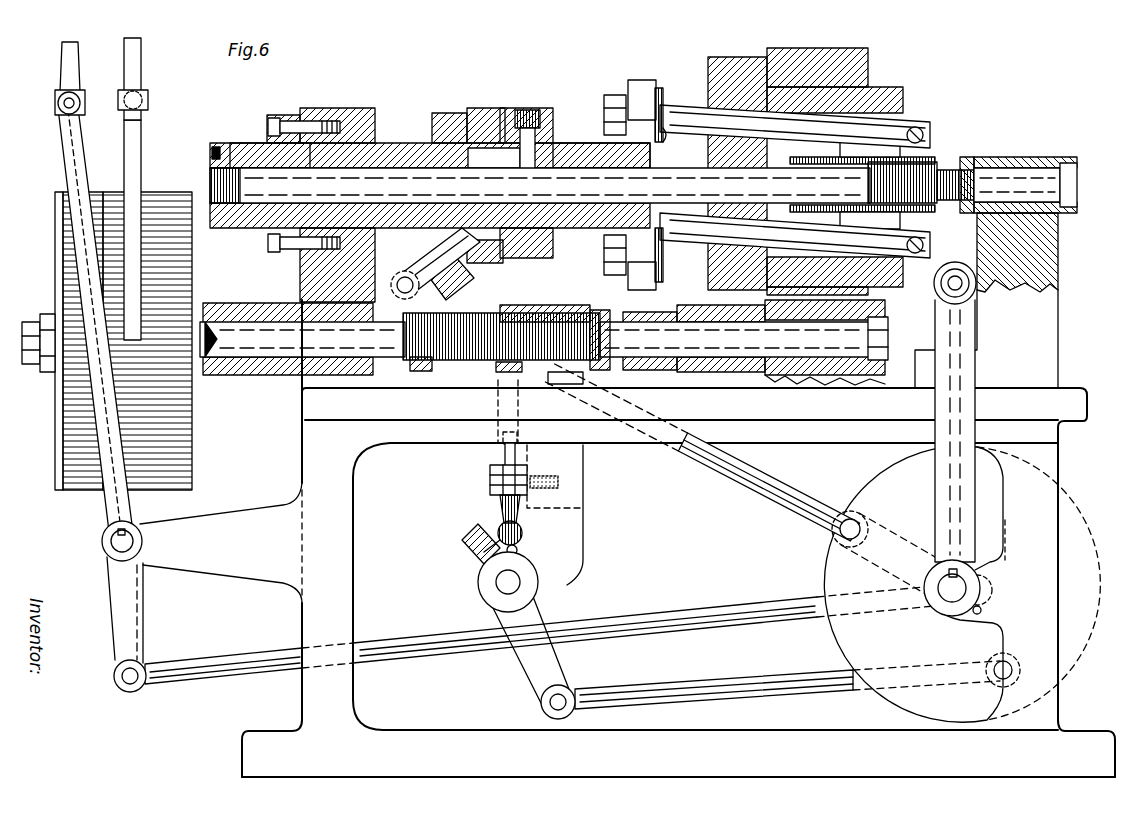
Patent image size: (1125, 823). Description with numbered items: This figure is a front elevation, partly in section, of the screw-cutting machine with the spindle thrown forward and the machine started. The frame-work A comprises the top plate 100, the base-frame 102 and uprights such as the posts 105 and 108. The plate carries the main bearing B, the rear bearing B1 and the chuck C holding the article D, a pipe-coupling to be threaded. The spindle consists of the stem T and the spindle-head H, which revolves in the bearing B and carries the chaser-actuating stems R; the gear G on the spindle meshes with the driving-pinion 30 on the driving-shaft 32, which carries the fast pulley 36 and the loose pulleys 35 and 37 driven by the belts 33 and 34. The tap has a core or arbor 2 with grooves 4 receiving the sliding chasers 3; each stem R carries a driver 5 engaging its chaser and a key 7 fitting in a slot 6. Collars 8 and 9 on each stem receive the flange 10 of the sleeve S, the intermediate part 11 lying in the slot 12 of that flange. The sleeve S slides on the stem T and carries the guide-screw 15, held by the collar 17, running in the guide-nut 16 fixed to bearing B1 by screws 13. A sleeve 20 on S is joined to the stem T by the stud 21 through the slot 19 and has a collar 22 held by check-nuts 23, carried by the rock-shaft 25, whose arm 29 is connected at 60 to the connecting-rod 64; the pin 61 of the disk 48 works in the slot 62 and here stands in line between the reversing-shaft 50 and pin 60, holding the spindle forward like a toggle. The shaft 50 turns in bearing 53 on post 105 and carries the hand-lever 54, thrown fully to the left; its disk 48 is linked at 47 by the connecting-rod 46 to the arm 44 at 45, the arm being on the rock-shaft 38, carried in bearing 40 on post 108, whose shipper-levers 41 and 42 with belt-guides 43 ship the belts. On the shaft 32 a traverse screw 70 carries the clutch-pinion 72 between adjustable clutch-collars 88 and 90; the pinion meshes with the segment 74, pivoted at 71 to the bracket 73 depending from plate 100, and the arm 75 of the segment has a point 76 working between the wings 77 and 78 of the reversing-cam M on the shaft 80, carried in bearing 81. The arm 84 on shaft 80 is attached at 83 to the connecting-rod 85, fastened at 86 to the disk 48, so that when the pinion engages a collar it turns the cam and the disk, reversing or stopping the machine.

The core or arbor 2 is at (928, 175).
The sliding chasers 3 is at (950, 203).
The grooves 4 is at (967, 157).
The driver 5 is at (925, 142).
The slots 6 is at (862, 185).
The key 7 is at (862, 152).
The collar 8 is at (665, 135).
The collar 9 is at (613, 95).
The flange 10 is at (640, 80).
The intermediate part 11 is at (658, 88).
The slot 12 is at (644, 290).
The screws 13 is at (313, 118).
The guide-screw 15 is at (254, 146).
The guide-nut 16 is at (283, 115).
The collar 17 is at (212, 153).
The slot 19 is at (494, 157).
The sleeve 20 is at (526, 254).
The screw or stud 21 is at (528, 110).
The collar 22 is at (486, 108).
The check-nuts 23 is at (458, 113).
The rock-shaft 25 is at (456, 268).
The arm 29 is at (418, 258).
The driving-pinion 30 is at (715, 372).
The driving-shaft 32 is at (393, 335).
The belt 33 is at (141, 51).
The belt 34 is at (77, 51).
The loose pulley 35 is at (185, 256).
The fast pulley 36 is at (112, 192).
The loose pulley 37 is at (55, 268).
The rock-shaft 38 is at (125, 545).
The bearing 40 is at (205, 557).
The shipper-lever 41 is at (125, 150).
The shipper-lever 42 is at (70, 150).
The belt-guide 43 is at (55, 100).
The arm 44 is at (132, 620).
The attachment point 45 is at (138, 686).
The connecting-rod 46 is at (258, 668).
The crank-pin 47 is at (988, 592).
The disk 48 is at (817, 565).
The reversing-shaft 50 is at (948, 598).
The bearing 53 is at (982, 612).
The hand-lever 54 is at (946, 478).
The pin 60 is at (405, 290).
The pin 61 is at (838, 531).
The slot 62 is at (878, 548).
The connecting-rod 64 is at (748, 477).
The traverse screw 70 is at (472, 360).
The pivot 71 is at (490, 478).
The clutch-pinion 72 is at (552, 306).
The bracket 73 is at (568, 462).
The segment 74 is at (503, 372).
The arm 75 is at (500, 509).
The point 76 is at (522, 533).
The cam-wing 77 is at (470, 542).
The cam-wing 78 is at (517, 550).
The shaft 80 is at (502, 590).
The bearing 81 is at (522, 583).
The attachment point 83 is at (550, 705).
The arm 84 is at (560, 652).
The connecting-rod 85 is at (745, 680).
The attachment point 86 is at (997, 678).
The clutch-collar 88 is at (421, 372).
The clutch-collar 90 is at (597, 310).
The top plate 100 is at (823, 357).
The base-frame 102 is at (478, 748).
The upright 105 is at (1031, 585).
The upright 108 is at (320, 554).
The frame-work A is at (332, 468).
The main bearing B is at (868, 58).
The rear bearing B1 is at (362, 108).
The chuck C is at (1017, 260).
The article D is at (1040, 185).
The gear G is at (745, 57).
The spindle-head H is at (904, 92).
The reversing-cam M is at (478, 560).
The chaser-actuating stems R is at (690, 115).
The sleeve S is at (567, 146).
The stem T is at (690, 185).